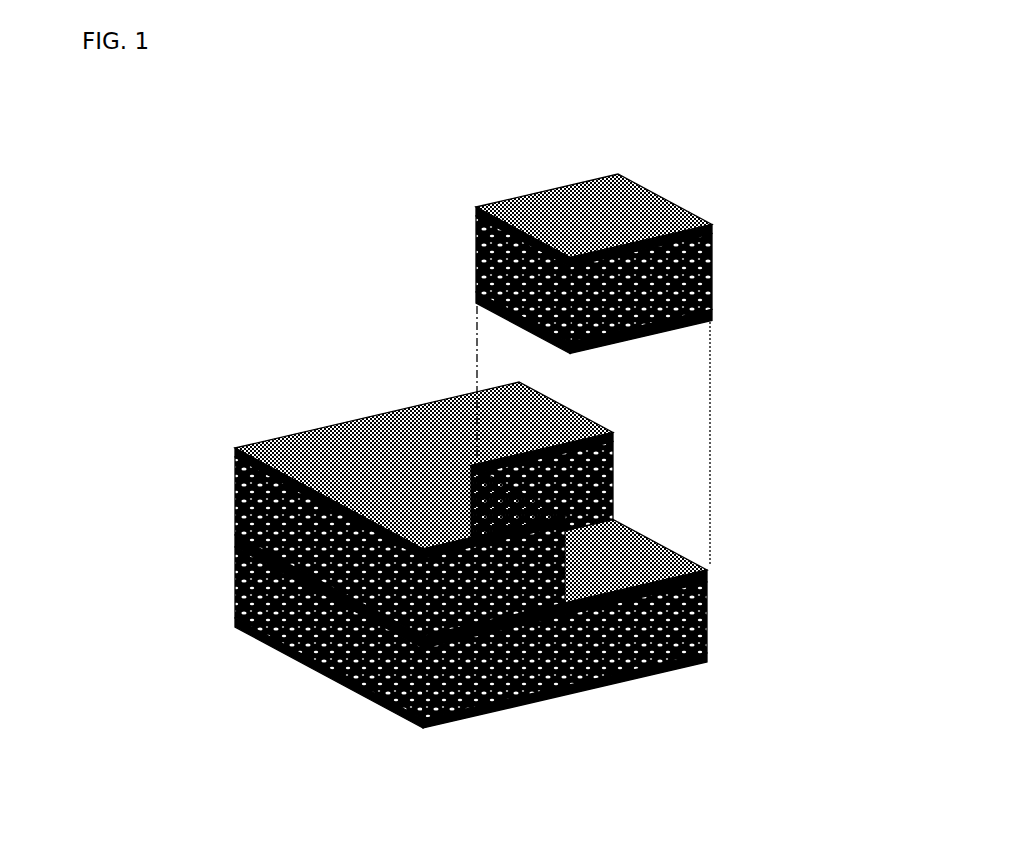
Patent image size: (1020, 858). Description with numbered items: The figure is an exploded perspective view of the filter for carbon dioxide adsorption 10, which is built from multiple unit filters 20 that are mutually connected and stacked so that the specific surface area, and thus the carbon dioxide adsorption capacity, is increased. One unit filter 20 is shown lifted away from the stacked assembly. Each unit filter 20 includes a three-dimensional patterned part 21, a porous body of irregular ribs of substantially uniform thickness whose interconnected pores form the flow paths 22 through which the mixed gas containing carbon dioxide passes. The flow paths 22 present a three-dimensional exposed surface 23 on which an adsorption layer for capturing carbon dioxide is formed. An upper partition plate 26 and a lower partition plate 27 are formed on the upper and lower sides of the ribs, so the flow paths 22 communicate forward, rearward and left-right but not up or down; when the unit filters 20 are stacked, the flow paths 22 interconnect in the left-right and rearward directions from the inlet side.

The filter for carbon dioxide adsorption 10 is at (307, 340).
The unit filter 20 is at (683, 164).
The three-dimensional patterned part 21 is at (232, 624).
The flow paths 22 is at (305, 671).
The three-dimensional exposed surface 23 is at (448, 680).
The upper partition plate 26 is at (353, 428).
The lower partition plate 27 is at (233, 539).